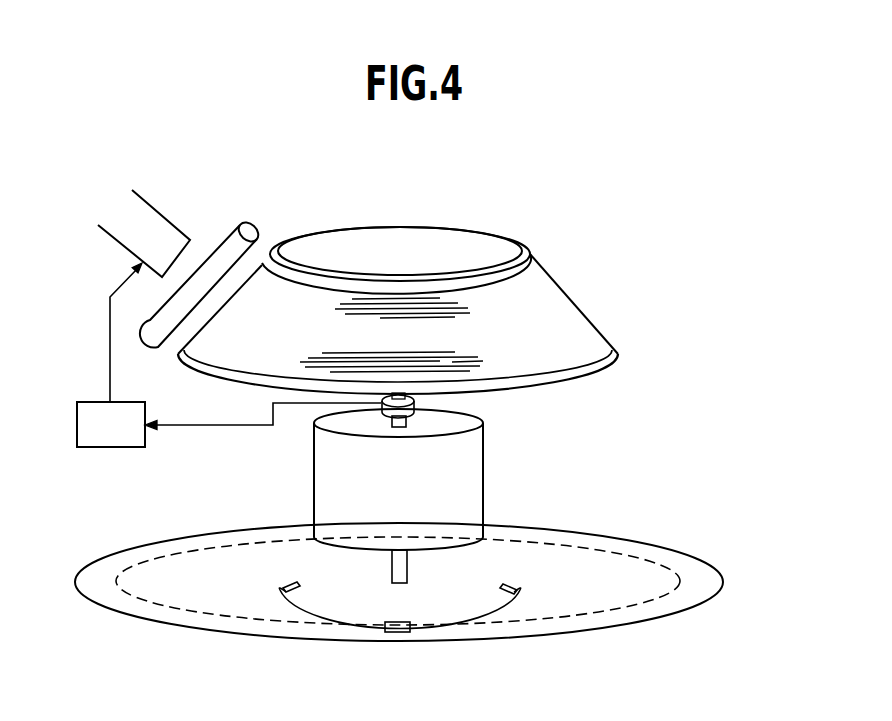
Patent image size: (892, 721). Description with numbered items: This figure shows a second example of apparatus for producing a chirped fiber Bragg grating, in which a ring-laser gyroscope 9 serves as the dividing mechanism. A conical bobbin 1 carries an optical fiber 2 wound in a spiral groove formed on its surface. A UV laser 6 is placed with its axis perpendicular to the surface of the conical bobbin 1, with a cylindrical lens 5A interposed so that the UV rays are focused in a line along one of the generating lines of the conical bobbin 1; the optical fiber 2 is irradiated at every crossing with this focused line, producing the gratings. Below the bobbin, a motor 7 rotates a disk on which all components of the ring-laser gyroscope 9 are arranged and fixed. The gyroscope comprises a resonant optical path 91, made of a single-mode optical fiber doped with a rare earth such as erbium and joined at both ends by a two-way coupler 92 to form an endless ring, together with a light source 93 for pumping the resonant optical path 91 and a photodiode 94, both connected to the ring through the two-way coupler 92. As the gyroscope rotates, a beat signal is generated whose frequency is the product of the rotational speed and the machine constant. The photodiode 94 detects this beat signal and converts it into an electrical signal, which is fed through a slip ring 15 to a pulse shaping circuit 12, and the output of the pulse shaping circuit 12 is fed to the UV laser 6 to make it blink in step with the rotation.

The conical bobbin 1 is at (493, 232).
The optical fiber 2 is at (557, 303).
The cylindrical lens 5A is at (227, 230).
The UV laser 6 is at (155, 202).
The motor 7 is at (483, 463).
The ring-laser gyroscope 9 is at (607, 533).
The pulse shaping circuit 12 is at (229, 355).
The slip ring 15 is at (415, 403).
The resonant optical path 91 is at (232, 617).
The two-way coupler 92 is at (395, 633).
The light source 93 is at (513, 575).
The photodiode 94 is at (284, 573).